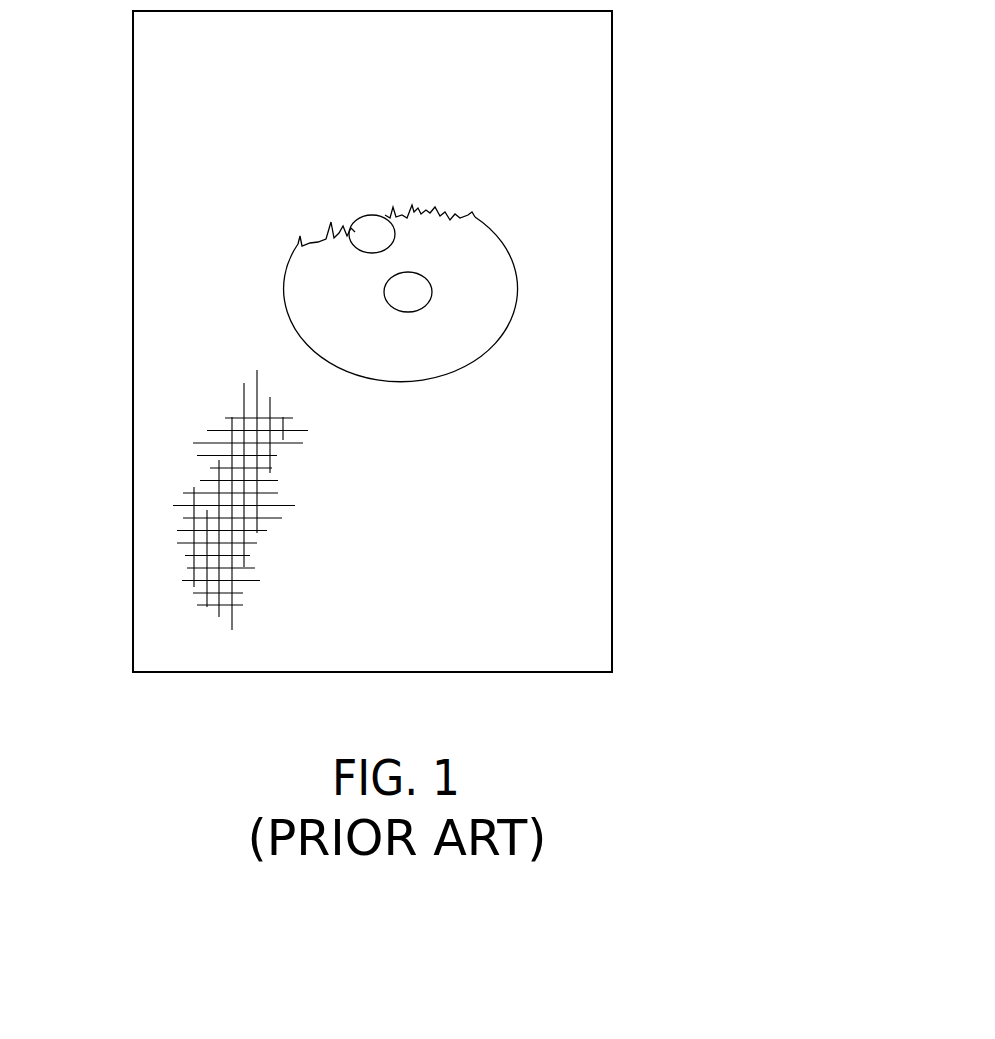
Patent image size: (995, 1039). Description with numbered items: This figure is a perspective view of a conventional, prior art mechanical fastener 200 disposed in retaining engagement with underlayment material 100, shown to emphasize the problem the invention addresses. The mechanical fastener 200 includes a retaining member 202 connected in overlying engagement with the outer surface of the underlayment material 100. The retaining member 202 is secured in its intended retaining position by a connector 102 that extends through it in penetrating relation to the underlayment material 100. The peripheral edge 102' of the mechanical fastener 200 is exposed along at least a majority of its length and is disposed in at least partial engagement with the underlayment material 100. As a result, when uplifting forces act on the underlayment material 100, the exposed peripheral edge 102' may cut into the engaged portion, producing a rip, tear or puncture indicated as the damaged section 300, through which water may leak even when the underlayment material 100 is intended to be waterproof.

The underlayment material 100 is at (543, 542).
The mechanical fastener 200 is at (448, 226).
The retaining member 202 is at (470, 338).
The connector 102 is at (563, 239).
The peripheral edge 102' is at (197, 254).
The damaged section 300 is at (435, 207).